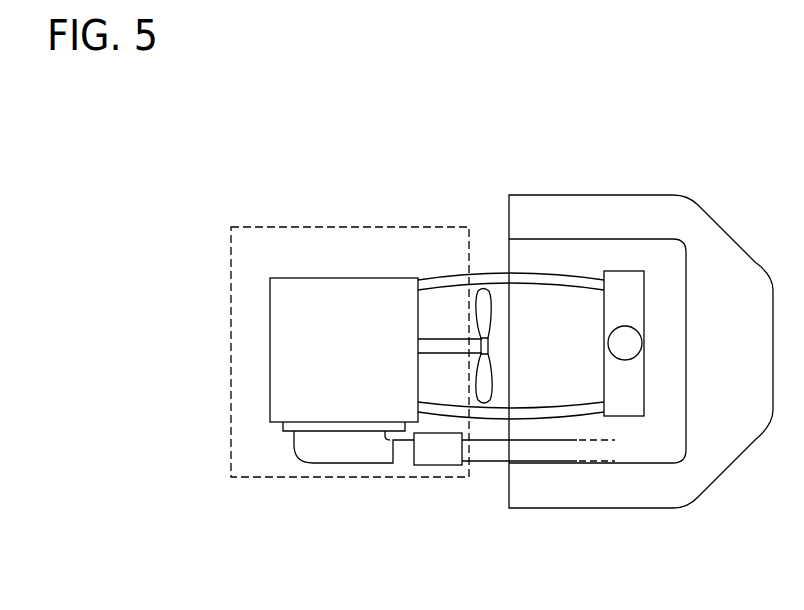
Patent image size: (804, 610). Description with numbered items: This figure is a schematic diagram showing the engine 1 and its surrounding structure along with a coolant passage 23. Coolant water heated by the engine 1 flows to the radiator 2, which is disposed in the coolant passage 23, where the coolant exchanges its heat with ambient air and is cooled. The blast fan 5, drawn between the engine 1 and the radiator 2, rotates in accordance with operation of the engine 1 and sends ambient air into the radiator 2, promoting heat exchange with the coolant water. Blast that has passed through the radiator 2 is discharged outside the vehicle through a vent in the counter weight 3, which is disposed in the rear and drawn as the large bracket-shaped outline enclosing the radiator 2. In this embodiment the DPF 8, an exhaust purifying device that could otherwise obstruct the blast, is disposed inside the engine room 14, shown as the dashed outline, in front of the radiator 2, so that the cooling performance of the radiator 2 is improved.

The engine 1 is at (352, 268).
The radiator 2 is at (628, 271).
The counter weight 3 is at (545, 195).
The blast fan 5 is at (491, 346).
The DPF 8 is at (441, 466).
The engine room 14 is at (408, 226).
The coolant passage 23 is at (498, 277).